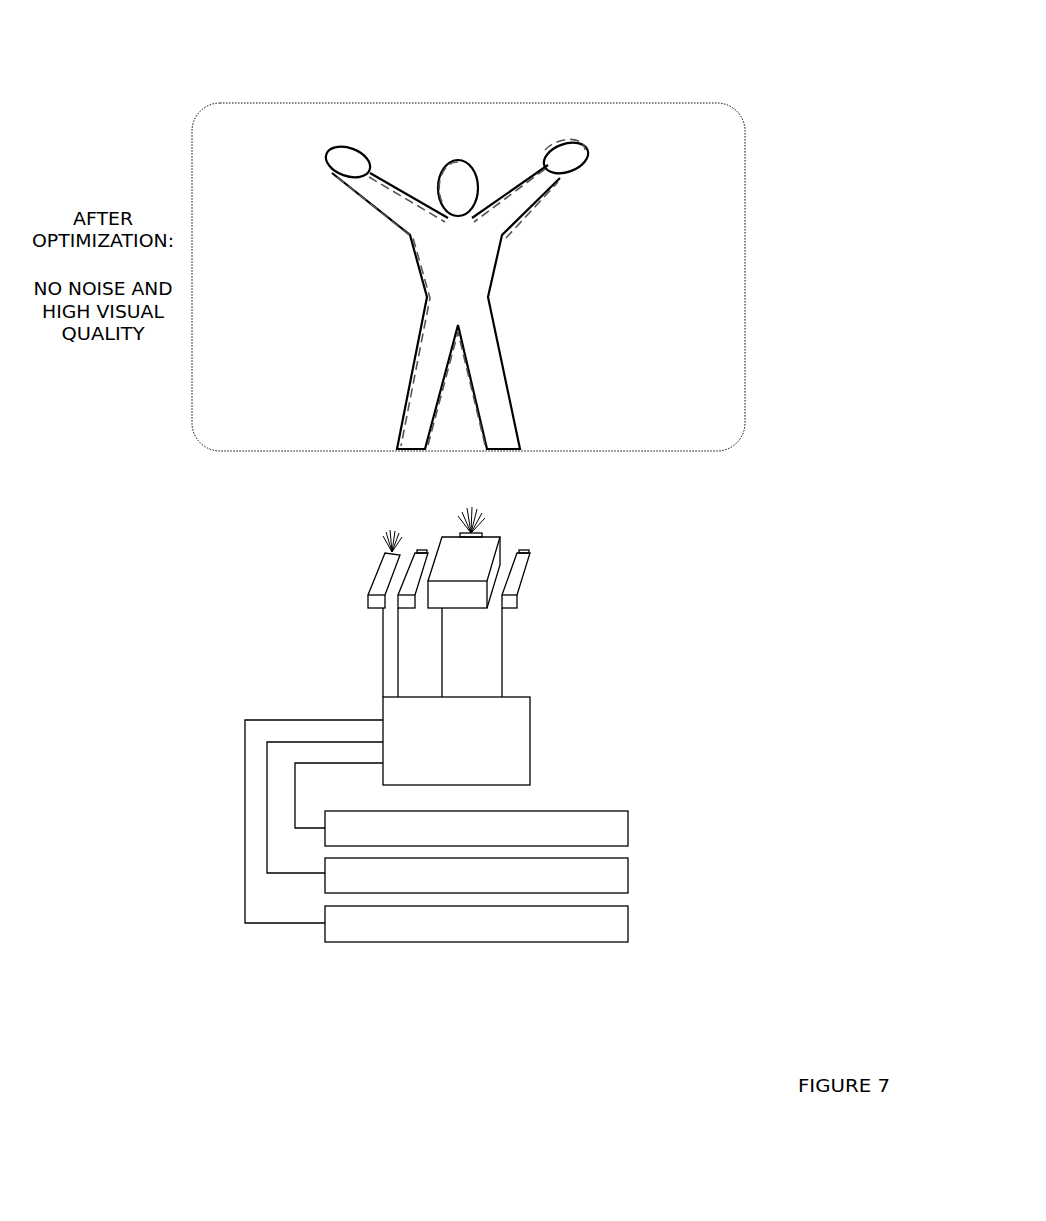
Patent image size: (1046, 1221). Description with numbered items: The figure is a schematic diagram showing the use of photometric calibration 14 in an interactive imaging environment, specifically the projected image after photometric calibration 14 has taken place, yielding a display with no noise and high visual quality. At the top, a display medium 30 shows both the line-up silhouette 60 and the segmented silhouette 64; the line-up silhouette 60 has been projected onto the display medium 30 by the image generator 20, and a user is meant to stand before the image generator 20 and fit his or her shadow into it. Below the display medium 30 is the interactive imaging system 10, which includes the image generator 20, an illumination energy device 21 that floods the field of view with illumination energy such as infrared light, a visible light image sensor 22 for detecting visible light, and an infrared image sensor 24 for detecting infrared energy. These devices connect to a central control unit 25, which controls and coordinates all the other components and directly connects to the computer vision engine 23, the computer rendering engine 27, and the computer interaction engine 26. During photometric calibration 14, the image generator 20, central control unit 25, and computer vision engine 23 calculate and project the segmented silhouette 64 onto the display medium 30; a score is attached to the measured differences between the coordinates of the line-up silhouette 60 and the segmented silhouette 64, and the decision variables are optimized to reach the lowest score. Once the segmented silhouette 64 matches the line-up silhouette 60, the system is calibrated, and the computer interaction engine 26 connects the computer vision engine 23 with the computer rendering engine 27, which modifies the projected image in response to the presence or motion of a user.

The photometric calibration 14 is at (465, 79).
The display medium 30 is at (745, 190).
The line-up silhouette 60 is at (403, 410).
The segmented silhouette 64 is at (410, 363).
The interactive imaging system 10 is at (644, 664).
The illumination energy device 21 is at (380, 610).
The visible light image sensor 22 is at (405, 607).
The image generator 20 is at (455, 598).
The infrared image sensor 24 is at (510, 608).
The central control unit 25 is at (503, 770).
The computer vision engine 23 is at (613, 820).
The computer rendering engine 27 is at (618, 868).
The computer interaction engine 26 is at (618, 917).